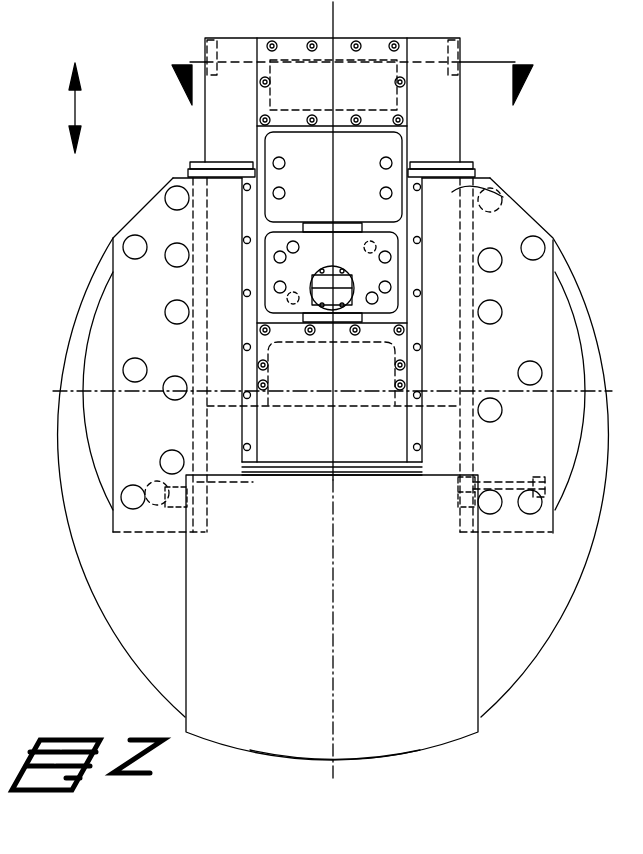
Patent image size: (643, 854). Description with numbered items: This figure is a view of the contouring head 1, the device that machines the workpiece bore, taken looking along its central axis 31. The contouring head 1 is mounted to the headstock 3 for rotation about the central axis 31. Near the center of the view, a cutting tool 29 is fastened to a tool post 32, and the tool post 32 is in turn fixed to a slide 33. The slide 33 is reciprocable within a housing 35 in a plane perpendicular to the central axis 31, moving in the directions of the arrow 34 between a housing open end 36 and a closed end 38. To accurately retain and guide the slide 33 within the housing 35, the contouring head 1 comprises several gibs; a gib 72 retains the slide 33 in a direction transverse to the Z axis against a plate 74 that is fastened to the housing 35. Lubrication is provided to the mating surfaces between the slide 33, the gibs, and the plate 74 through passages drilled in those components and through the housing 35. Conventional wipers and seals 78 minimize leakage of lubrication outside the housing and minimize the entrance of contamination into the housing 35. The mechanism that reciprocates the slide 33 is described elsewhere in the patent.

The contouring head 1 is at (527, 642).
The headstock 3 is at (350, 70).
The cutting tool 29 is at (331, 268).
The central axis 31 is at (335, 390).
The tool post 32 is at (352, 285).
The slide 33 is at (462, 118).
The arrow 34 is at (76, 107).
The housing 35 is at (283, 758).
The housing open end 36 is at (502, 197).
The closed end 38 is at (436, 737).
The gib 72 is at (185, 520).
The plate 74 is at (458, 483).
The wipers and seals 78 is at (200, 162).